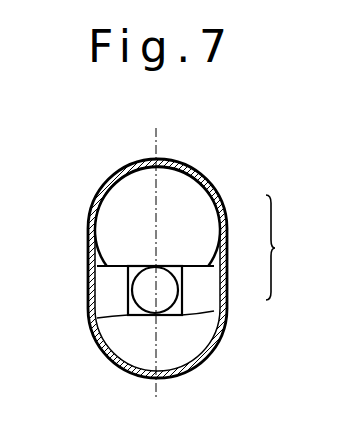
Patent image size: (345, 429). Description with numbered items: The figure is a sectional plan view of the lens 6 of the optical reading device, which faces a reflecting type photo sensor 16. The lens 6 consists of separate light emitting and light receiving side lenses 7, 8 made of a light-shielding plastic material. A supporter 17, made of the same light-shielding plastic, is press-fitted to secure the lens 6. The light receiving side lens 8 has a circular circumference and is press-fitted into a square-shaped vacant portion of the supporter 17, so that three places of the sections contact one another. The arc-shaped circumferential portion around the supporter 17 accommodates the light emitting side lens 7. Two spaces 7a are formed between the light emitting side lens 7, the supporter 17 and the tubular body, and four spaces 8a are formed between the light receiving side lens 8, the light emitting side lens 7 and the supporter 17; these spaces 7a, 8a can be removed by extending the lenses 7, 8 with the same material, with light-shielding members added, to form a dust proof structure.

The reflecting type photo sensor 16 is at (202, 165).
The light emitting side lens 7 is at (198, 225).
The spaces 7a is at (97, 262).
The light receiving side lens 8 is at (167, 292).
The spaces 8a is at (97, 317).
The supporter 17 is at (180, 347).
The lens 6 is at (298, 266).